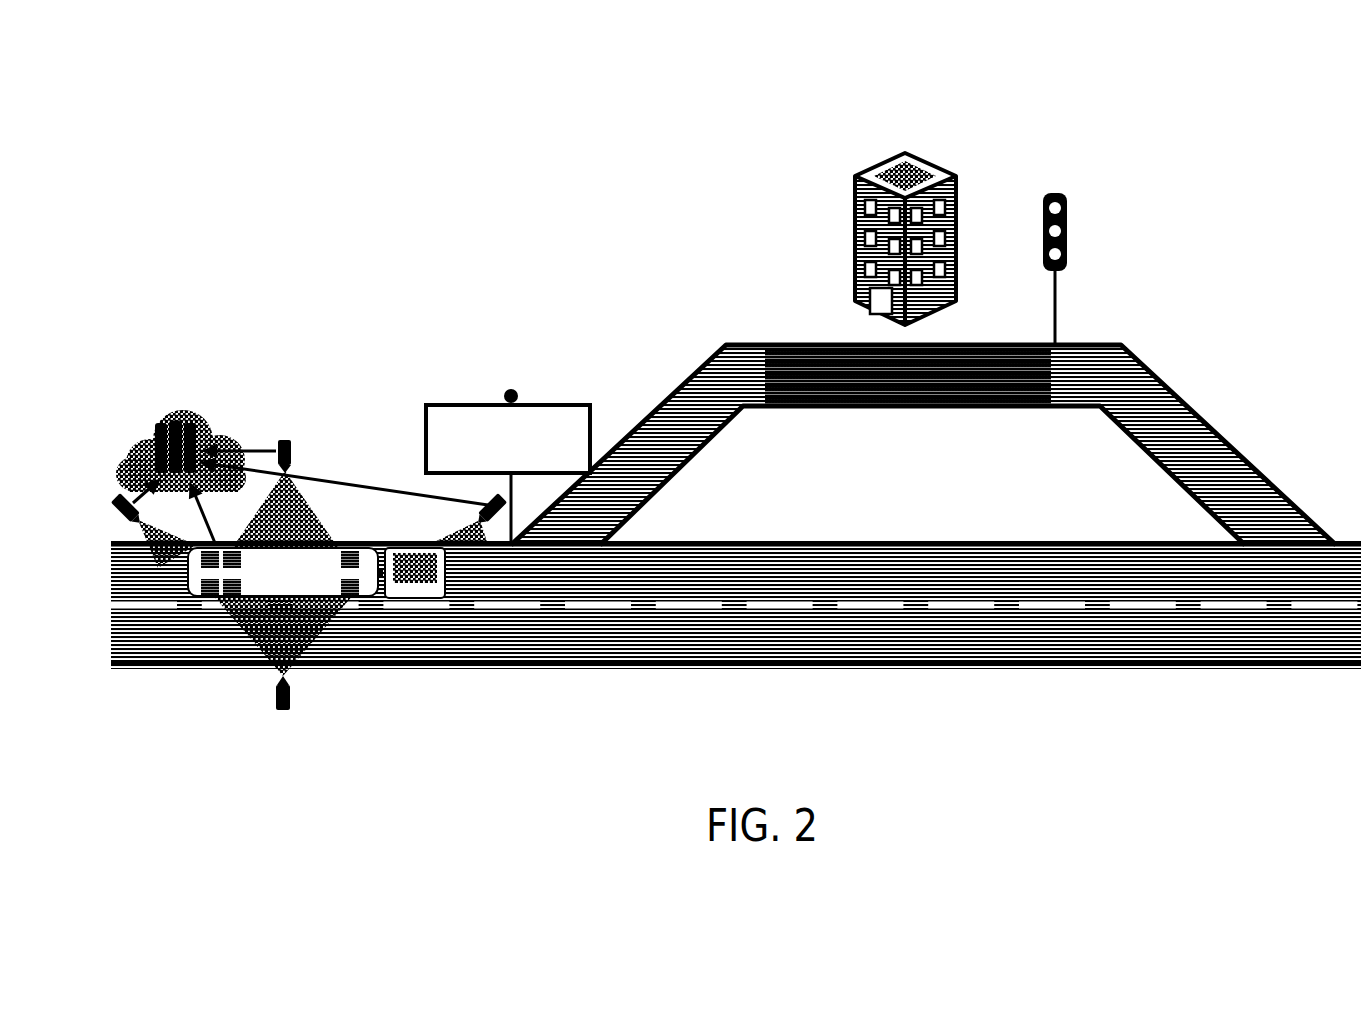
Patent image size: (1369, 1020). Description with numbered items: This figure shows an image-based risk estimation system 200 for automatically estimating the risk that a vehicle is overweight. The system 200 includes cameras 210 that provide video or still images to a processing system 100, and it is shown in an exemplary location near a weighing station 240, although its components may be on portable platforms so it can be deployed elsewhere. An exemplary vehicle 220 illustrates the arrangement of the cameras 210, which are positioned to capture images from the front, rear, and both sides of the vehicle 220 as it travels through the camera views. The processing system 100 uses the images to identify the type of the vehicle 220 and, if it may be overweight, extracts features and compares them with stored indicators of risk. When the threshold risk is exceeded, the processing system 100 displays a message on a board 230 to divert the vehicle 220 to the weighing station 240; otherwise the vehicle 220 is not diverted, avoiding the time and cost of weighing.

The processing system 100 is at (158, 387).
The image-based risk estimation system 200 is at (248, 342).
The cameras 210 is at (112, 517).
The vehicle 220 is at (303, 577).
The board 230 is at (482, 362).
The weighing station 240 is at (768, 177).